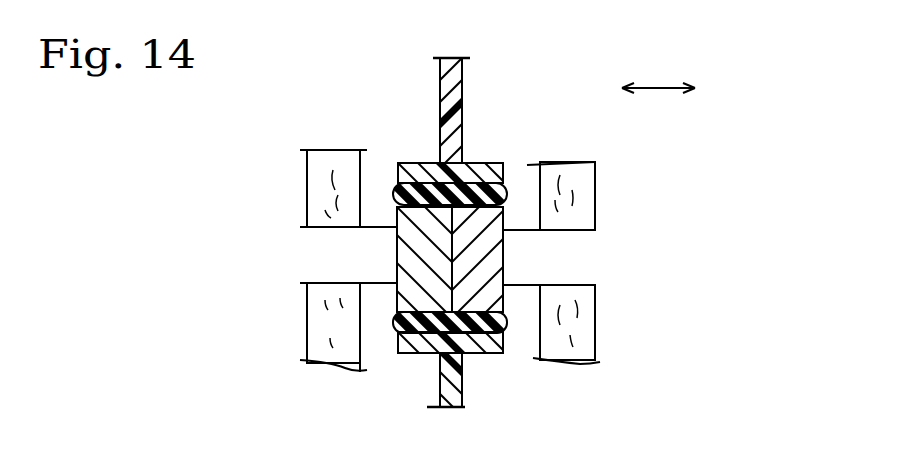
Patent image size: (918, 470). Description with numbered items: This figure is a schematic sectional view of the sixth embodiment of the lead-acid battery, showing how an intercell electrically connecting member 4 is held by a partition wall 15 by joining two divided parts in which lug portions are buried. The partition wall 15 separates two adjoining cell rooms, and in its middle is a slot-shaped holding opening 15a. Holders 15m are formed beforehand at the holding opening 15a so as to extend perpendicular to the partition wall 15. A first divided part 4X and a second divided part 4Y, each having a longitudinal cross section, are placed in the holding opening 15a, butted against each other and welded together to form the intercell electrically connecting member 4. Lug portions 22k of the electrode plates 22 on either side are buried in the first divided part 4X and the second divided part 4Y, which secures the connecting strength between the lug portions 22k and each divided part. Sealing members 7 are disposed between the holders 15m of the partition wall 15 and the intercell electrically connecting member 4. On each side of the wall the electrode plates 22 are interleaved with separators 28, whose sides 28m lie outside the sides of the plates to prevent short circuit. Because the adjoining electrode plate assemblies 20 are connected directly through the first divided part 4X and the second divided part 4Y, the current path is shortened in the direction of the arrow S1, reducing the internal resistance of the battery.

The intercell electrically connecting member 4 is at (441, 278).
The first divided part 4X is at (410, 260).
The second divided part 4Y is at (483, 267).
The sealing member 7 is at (540, 163).
The partition wall 15 is at (458, 73).
The holder 15m is at (477, 165).
The holding opening 15a is at (507, 190).
The electrode plate assembly 20 is at (622, 162).
The electrode plate 22 is at (282, 205).
The lug portion 22k is at (320, 245).
The separator 28 is at (325, 155).
The side of separator 28m is at (363, 165).
The sliding direction S1 is at (640, 88).